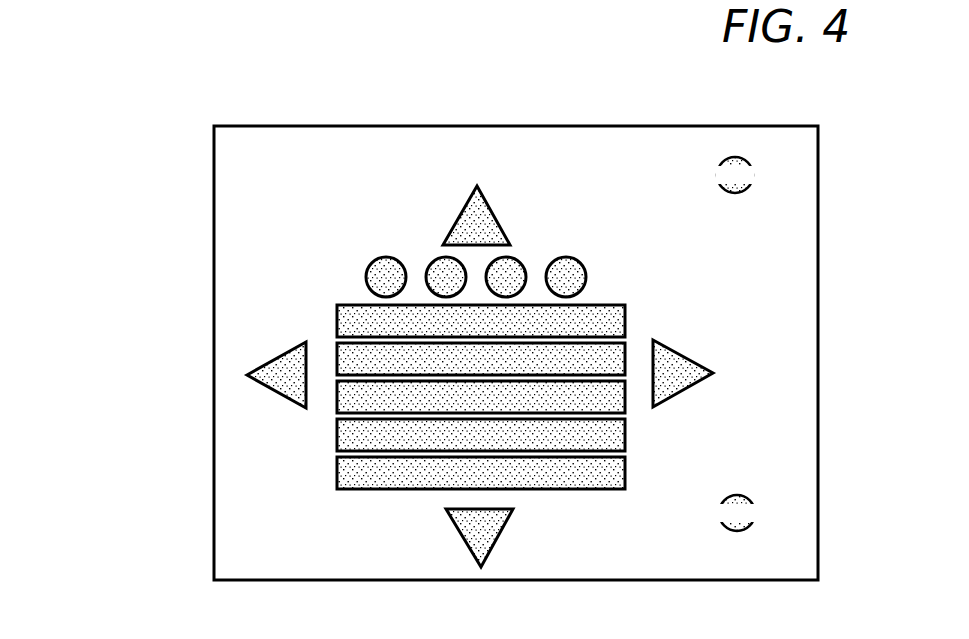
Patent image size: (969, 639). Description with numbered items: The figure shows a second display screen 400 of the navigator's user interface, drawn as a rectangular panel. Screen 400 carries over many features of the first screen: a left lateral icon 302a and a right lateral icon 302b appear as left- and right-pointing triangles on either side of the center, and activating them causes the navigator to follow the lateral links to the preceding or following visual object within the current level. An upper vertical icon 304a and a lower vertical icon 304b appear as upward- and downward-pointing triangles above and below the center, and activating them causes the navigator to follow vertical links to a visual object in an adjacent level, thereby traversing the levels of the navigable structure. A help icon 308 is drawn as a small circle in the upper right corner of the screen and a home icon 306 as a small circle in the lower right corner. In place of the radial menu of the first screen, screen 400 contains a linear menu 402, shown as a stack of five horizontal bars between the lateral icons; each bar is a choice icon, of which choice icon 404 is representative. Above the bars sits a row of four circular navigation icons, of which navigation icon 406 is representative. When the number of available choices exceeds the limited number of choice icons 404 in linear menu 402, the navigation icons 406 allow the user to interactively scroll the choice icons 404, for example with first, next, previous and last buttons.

The second display screen 400 is at (182, 115).
The left lateral icon 302a is at (263, 363).
The right lateral icon 302b is at (689, 356).
The upper vertical icon 304a is at (463, 210).
The lower vertical icon 304b is at (497, 543).
The home icon 306 is at (750, 497).
The help icon 308 is at (745, 160).
The linear menu 402 is at (337, 318).
The choice icon 404 is at (337, 473).
The navigation icon 406 is at (367, 268).